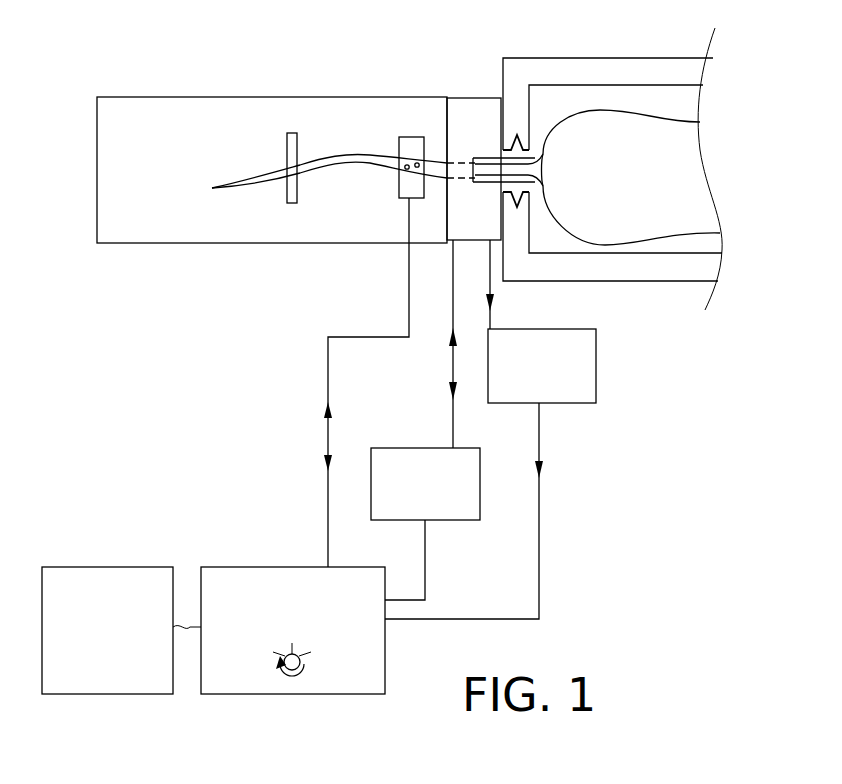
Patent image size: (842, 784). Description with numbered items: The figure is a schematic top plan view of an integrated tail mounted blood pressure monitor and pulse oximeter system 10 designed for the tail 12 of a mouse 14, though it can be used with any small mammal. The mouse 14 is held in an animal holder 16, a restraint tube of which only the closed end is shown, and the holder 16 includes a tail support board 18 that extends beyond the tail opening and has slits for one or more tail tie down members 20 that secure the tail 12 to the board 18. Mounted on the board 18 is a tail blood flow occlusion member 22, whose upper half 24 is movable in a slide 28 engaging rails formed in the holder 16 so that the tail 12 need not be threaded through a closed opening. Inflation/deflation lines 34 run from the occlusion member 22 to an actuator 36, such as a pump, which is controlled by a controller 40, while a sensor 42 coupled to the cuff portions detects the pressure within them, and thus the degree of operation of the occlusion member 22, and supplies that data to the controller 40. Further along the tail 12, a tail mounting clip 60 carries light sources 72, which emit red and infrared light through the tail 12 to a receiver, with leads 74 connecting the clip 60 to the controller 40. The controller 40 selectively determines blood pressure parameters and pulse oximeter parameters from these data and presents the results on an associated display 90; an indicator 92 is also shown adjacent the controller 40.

The integrated tail mounted blood pressure monitor and pulse oximeter system 10 is at (329, 47).
The tail 12 is at (368, 153).
The mouse 14 is at (622, 182).
The animal holder 16 is at (650, 275).
The tail support board 18 is at (176, 171).
The tail tie down member 20 is at (292, 193).
The tail blood flow occlusion member 22 is at (480, 84).
The upper housing half 24 is at (490, 147).
The slide 28 is at (517, 152).
The inflation/deflation lines 34 is at (452, 417).
The actuator 36 is at (423, 505).
The controller 40 is at (245, 682).
The sensor 42 is at (556, 385).
The tail mounting clip 60 is at (404, 185).
The light sources 72 is at (417, 162).
The leads 74 is at (327, 383).
The display 90 is at (91, 657).
The alarm indicator 92 is at (300, 661).